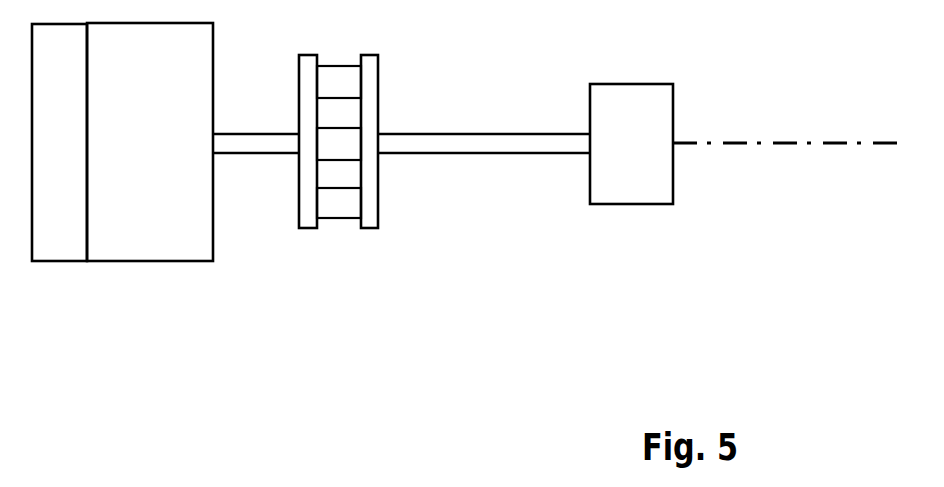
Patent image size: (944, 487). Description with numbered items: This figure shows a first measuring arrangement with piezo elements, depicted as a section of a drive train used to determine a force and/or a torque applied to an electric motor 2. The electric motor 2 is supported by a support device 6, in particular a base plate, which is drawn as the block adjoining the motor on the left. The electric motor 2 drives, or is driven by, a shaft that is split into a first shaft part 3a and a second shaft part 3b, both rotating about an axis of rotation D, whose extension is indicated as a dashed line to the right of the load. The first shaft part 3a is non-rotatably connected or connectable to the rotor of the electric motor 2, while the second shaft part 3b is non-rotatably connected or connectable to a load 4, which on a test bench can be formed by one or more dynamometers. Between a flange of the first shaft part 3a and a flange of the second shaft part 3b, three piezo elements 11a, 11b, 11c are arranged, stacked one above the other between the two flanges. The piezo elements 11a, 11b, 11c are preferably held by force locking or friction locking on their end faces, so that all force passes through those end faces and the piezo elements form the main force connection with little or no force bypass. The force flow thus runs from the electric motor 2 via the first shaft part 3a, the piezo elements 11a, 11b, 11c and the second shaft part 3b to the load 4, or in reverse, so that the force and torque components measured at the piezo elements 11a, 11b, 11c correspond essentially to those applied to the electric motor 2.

The support device 6 is at (50, 158).
The electric motor 2 is at (141, 158).
The first shaft part 3a is at (225, 134).
The second shaft part 3b is at (440, 134).
The piezo element 11a is at (322, 96).
The piezo element 11b is at (322, 158).
The piezo element 11c is at (322, 218).
The load 4 is at (650, 97).
The axis of rotation D is at (737, 144).